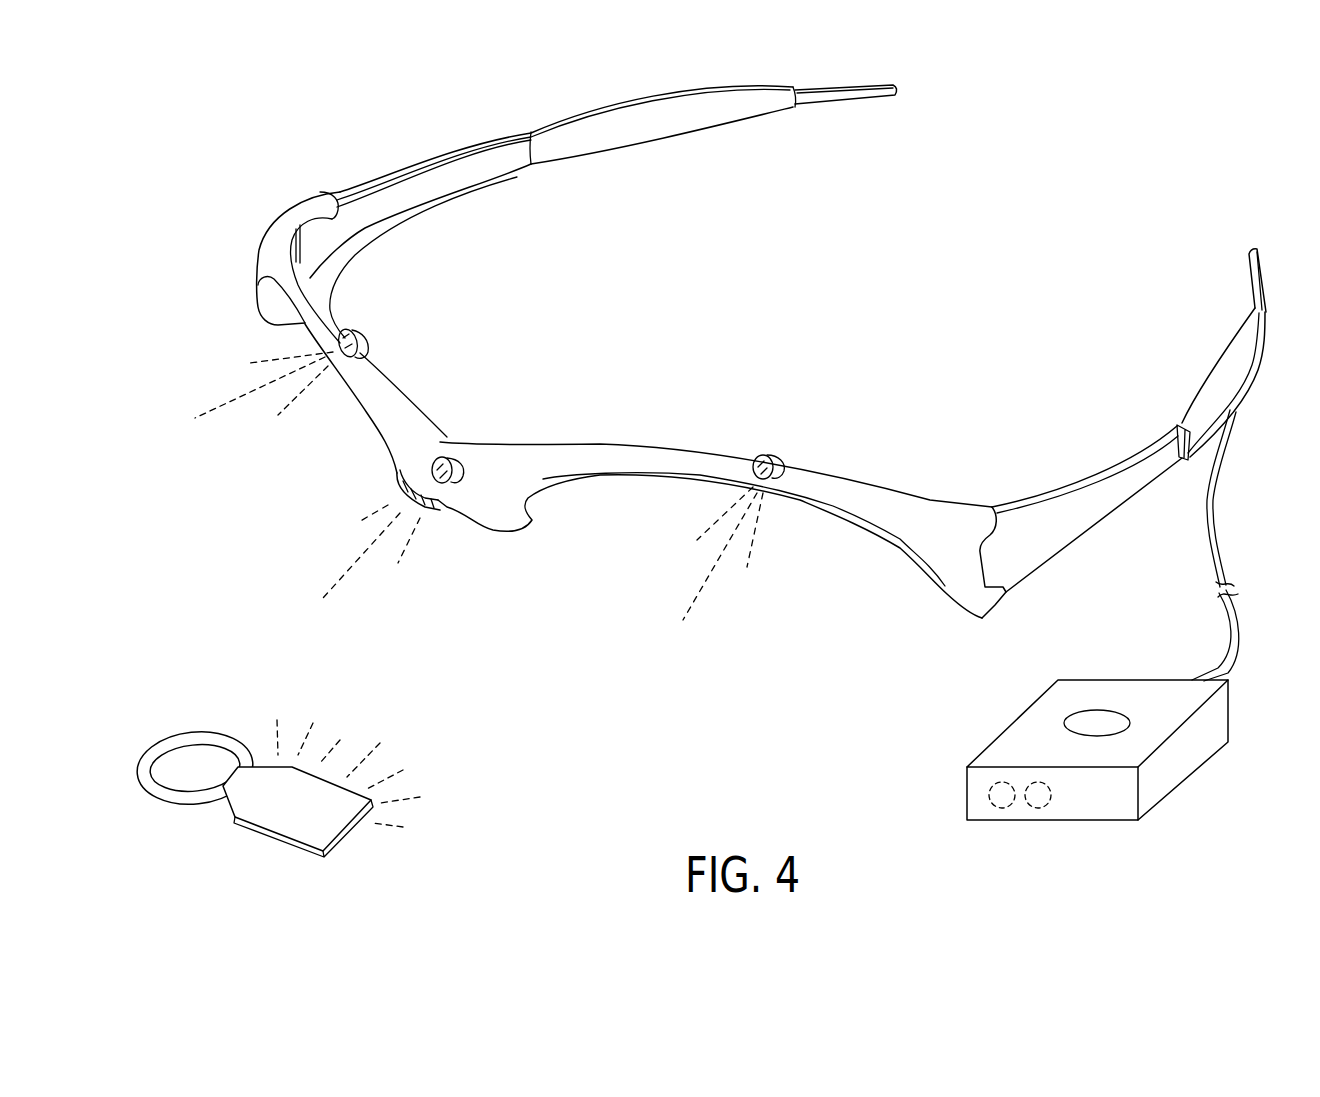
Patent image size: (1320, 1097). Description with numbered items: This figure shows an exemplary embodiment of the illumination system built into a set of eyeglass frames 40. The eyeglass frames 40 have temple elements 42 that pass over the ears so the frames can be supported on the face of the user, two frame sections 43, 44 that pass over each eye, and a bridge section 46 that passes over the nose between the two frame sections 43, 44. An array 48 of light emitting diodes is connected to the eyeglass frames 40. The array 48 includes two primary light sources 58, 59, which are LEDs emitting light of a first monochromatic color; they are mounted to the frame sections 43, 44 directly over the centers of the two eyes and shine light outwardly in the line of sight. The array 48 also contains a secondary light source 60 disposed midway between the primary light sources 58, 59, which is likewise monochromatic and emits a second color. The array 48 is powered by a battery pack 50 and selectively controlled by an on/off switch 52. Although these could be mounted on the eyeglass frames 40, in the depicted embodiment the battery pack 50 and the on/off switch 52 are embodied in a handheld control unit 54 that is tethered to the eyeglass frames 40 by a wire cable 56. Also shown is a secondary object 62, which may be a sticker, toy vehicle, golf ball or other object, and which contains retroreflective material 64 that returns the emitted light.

The eyeglass frames 40 is at (874, 306).
The temple elements 42 is at (497, 160).
The frame section 43 is at (377, 377).
The frame section 44 is at (857, 490).
The bridge section 46 is at (500, 470).
The array of light emitting diodes 48 is at (360, 317).
The battery pack 50 is at (1007, 800).
The on/off switch 52 is at (1083, 723).
The handheld control unit 54 is at (1118, 687).
The wire cable 56 is at (1217, 550).
The primary light source 58 is at (350, 360).
The primary light source 59 is at (767, 460).
The secondary light source 60 is at (443, 457).
The secondary object 62 is at (179, 710).
The retroreflective material 64 is at (280, 810).